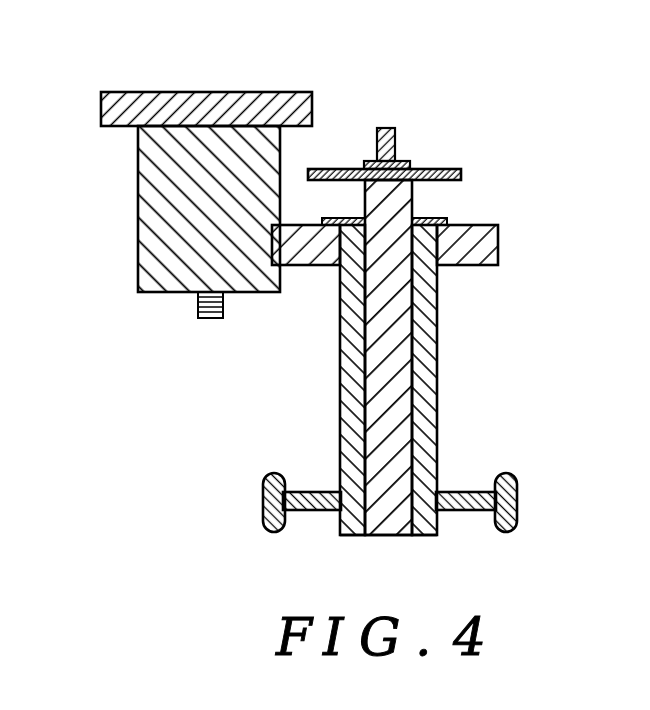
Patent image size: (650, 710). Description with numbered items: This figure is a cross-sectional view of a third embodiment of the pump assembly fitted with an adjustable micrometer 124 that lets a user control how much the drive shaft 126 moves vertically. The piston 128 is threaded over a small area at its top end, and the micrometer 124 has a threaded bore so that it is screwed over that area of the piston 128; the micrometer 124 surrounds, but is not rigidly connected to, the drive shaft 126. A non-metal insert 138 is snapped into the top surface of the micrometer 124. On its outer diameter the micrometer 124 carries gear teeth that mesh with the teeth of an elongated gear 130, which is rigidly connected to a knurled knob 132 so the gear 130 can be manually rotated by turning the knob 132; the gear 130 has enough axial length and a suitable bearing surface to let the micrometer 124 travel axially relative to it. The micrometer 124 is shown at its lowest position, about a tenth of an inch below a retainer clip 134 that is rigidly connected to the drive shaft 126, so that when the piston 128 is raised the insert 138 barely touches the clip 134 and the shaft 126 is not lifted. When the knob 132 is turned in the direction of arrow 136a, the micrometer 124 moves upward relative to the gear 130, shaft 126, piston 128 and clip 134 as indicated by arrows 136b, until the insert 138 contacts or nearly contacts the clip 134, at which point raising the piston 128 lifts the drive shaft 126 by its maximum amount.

The micrometer 124 is at (500, 250).
The drive shaft 126 is at (402, 537).
The piston 128 is at (438, 367).
The elongated gear 130 is at (138, 176).
The knurled knob 132 is at (101, 105).
The retainer clip 134 is at (428, 169).
The arrow 136a is at (232, 70).
The arrows 136b is at (329, 210).
The non-metal insert 138 is at (447, 219).